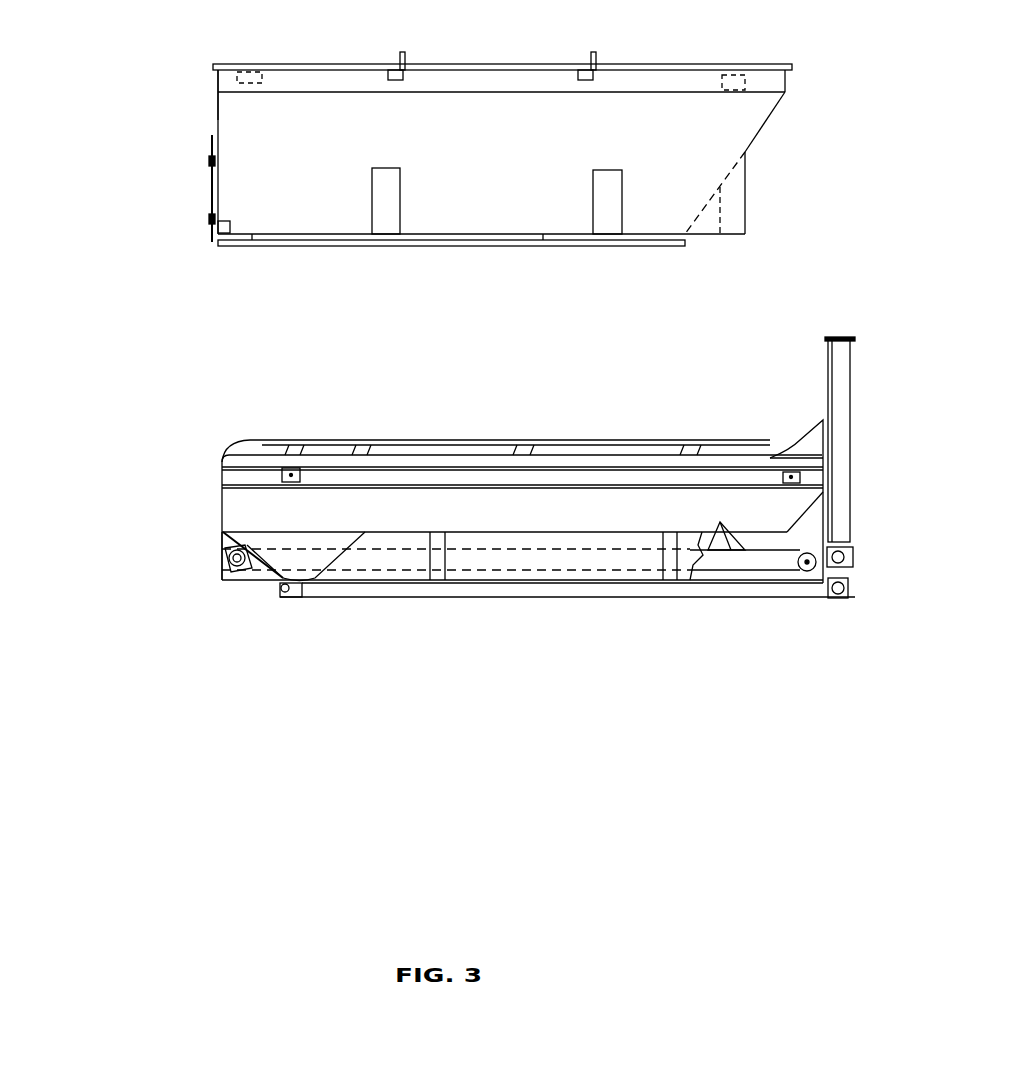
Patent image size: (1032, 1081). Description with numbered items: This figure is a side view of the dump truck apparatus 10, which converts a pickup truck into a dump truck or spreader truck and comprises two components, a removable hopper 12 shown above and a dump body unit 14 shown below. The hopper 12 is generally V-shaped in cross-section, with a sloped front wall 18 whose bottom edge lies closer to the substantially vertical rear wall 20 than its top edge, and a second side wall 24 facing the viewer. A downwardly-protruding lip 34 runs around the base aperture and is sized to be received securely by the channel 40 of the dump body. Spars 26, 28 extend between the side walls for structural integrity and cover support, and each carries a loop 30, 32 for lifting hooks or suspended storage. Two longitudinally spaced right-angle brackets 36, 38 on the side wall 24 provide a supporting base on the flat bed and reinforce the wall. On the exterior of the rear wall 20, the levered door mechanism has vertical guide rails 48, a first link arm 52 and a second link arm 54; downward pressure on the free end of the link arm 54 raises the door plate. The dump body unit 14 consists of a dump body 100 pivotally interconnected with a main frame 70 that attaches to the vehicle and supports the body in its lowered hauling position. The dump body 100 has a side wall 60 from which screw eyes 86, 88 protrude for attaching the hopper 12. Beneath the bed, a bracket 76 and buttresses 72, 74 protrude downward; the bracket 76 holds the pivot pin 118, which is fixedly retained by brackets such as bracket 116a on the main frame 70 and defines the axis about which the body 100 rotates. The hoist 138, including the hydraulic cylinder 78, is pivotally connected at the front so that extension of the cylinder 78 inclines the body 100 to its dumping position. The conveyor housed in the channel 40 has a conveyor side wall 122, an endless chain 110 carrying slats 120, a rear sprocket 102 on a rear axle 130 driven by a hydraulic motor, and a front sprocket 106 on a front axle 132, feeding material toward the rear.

The dump truck apparatus 10 is at (110, 92).
The hopper 12 is at (845, 78).
The dump body unit 14 is at (875, 447).
The front wall 18 is at (765, 125).
The rear wall 20 is at (218, 112).
The second side wall 24 is at (498, 140).
The spar 26 is at (390, 70).
The spar 28 is at (580, 70).
The loop 30 is at (405, 52).
The loop 32 is at (596, 52).
The lip 34 is at (685, 243).
The right-angle bracket 36 is at (378, 217).
The right-angle bracket 38 is at (613, 218).
The channel 40 is at (800, 585).
The vertical guide rails 48 is at (216, 230).
The first link arm 52 is at (210, 182).
The second link arm 54 is at (212, 147).
The side wall 60 is at (510, 517).
The main frame 70 is at (556, 598).
The buttress 72 is at (440, 565).
The buttress 74 is at (660, 546).
The bracket 76 is at (320, 558).
The hydraulic cylinder 78 is at (850, 370).
The screw eye 86 is at (293, 468).
The screw eye 88 is at (786, 472).
The dump body 100 is at (212, 495).
The rear sprocket 102 is at (235, 568).
The front sprocket 106 is at (800, 570).
The endless chain 110 is at (718, 575).
The bracket 116a is at (285, 600).
The pivot pin 118 is at (290, 593).
The slats 120 is at (718, 524).
The conveyor side wall 122 is at (690, 565).
The rear axle 130 is at (247, 545).
The front axle 132 is at (795, 545).
The hoist 138 is at (860, 568).